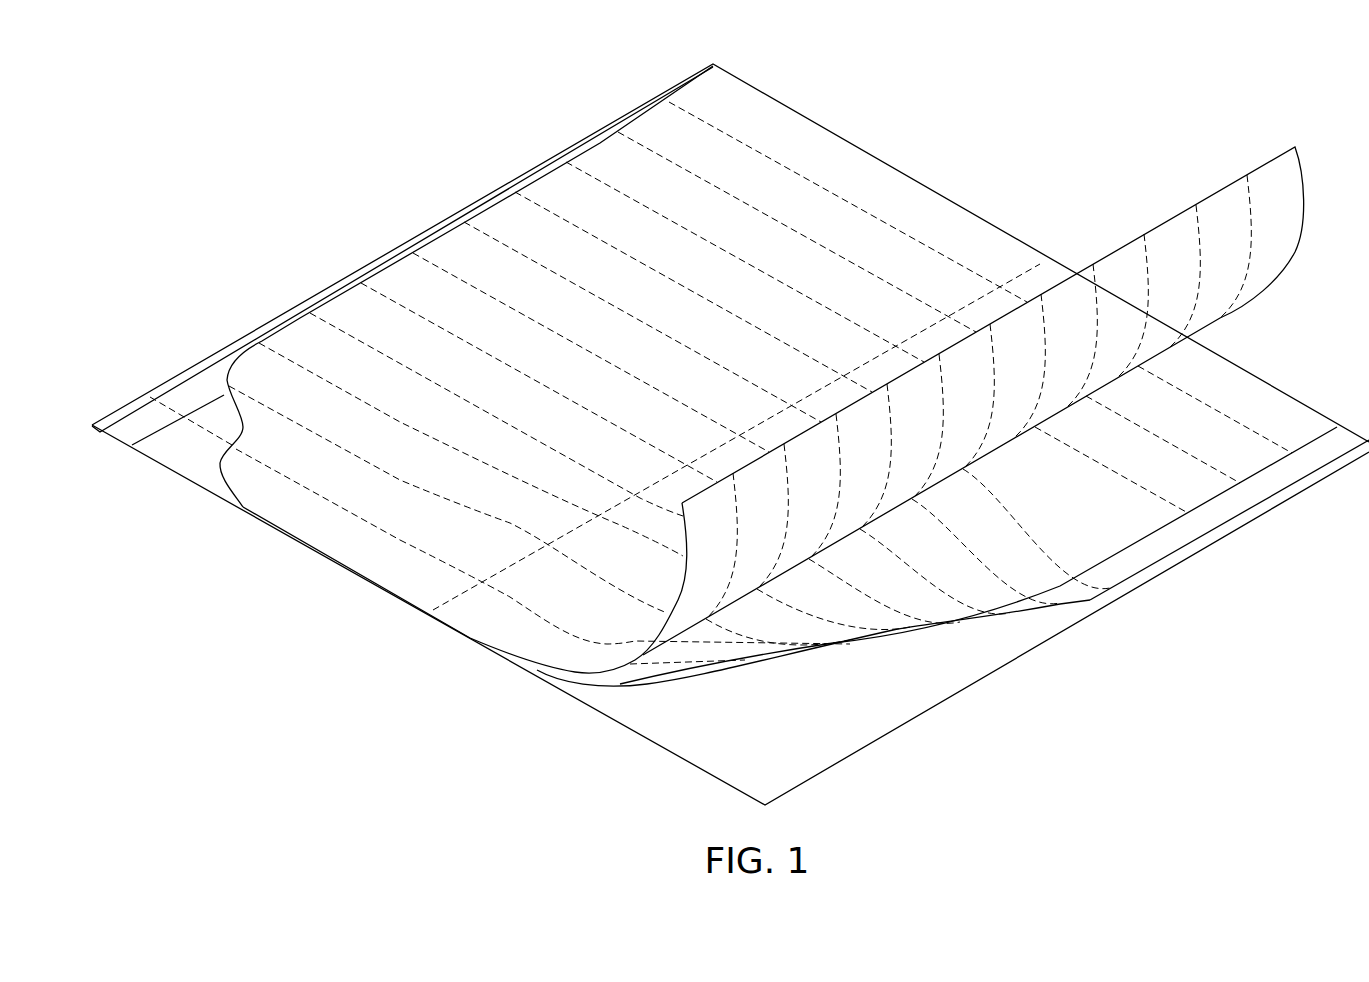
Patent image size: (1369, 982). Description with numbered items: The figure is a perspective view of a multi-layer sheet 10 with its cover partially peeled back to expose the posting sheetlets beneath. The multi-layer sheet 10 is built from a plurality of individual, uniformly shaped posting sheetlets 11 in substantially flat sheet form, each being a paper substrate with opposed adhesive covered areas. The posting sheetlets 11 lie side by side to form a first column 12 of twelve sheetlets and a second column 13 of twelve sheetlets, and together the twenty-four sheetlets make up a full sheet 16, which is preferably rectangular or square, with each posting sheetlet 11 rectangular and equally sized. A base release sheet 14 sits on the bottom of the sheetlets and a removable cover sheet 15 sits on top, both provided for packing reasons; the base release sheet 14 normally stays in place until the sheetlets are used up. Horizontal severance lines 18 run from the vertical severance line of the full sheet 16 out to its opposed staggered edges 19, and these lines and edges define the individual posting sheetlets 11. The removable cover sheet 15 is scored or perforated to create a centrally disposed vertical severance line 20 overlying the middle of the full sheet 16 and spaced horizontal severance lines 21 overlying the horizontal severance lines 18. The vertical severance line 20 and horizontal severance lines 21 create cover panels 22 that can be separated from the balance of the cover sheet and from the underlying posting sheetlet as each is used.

The multi-layer sheet 10 is at (350, 636).
The posting sheetlets 11 is at (205, 402).
The first column 12 is at (205, 490).
The second column 13 is at (671, 680).
The base release sheet 14 is at (760, 752).
The removable cover sheet 15 is at (848, 150).
The full sheet 16 is at (1250, 368).
The horizontal severance lines 18 is at (1212, 527).
The staggered edges 19 is at (152, 390).
The vertical severance line 20 is at (1024, 266).
The horizontal severance lines 21 is at (846, 203).
The cover panels 22 is at (1298, 172).